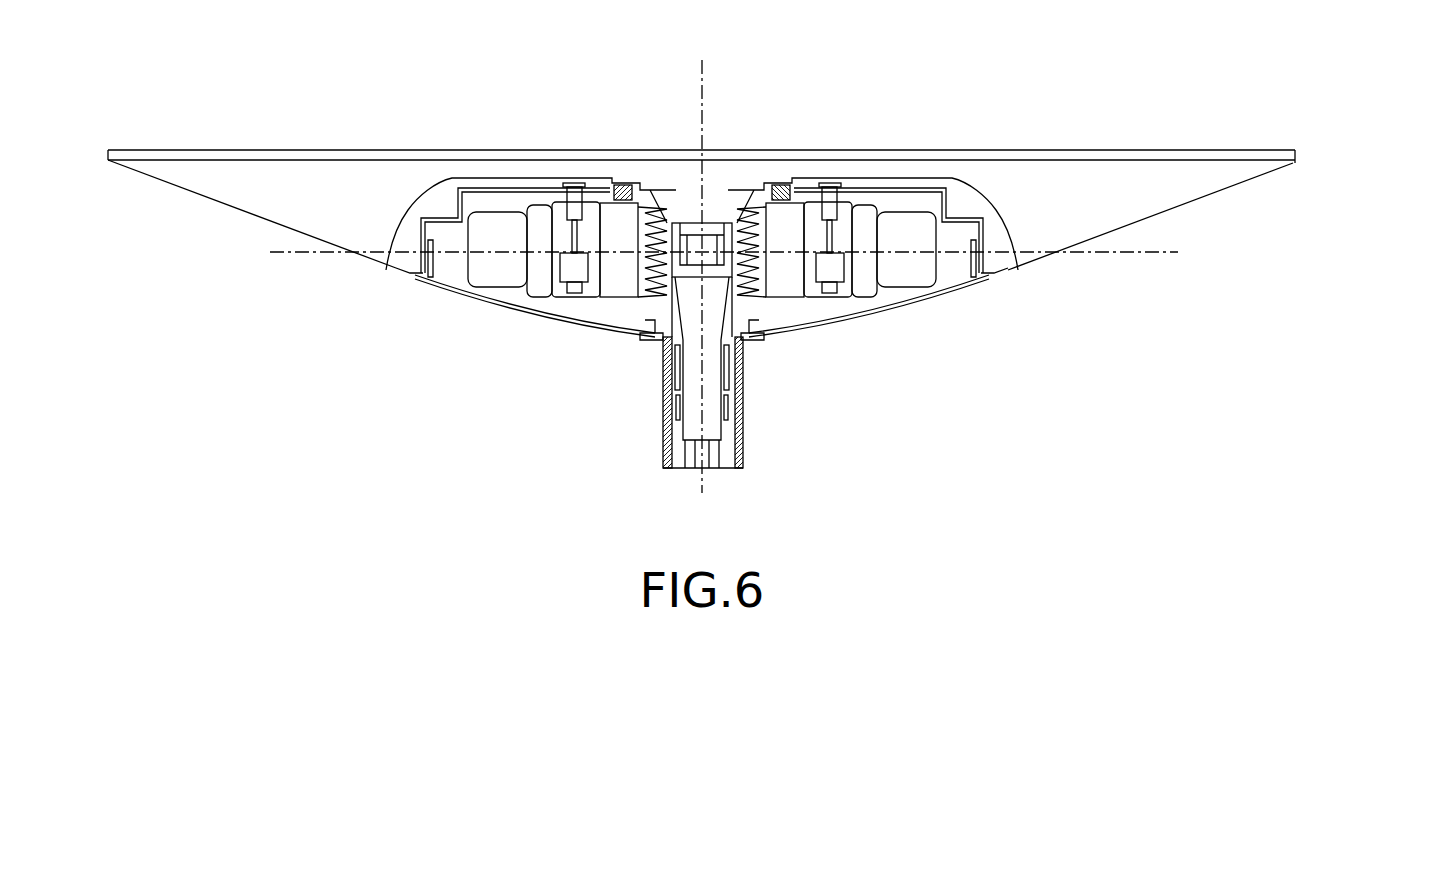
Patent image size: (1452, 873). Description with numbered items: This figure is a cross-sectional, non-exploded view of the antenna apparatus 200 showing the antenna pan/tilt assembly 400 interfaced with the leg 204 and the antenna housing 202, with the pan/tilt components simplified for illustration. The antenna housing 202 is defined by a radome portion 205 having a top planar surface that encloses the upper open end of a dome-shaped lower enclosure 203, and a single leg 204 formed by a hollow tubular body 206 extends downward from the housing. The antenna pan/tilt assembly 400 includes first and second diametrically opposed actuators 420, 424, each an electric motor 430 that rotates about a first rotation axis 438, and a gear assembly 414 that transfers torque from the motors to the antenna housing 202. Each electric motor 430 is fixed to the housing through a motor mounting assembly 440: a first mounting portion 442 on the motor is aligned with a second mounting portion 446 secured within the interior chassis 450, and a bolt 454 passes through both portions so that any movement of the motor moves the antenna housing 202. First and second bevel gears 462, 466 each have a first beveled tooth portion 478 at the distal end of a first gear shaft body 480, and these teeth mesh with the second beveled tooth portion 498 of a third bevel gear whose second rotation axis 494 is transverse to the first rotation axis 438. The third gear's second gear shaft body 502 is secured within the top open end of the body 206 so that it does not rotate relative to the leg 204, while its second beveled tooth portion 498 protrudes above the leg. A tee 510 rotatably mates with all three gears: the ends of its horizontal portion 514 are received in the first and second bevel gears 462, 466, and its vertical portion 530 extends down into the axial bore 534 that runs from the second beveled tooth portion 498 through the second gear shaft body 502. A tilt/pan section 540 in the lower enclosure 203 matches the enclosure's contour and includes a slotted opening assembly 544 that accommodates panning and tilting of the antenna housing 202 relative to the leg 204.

The antenna apparatus 200 is at (1232, 253).
The antenna housing 202 is at (1318, 150).
The lower enclosure 203 is at (1100, 235).
The leg 204 is at (748, 420).
The radome portion 205 is at (1197, 155).
The tubular body 206 is at (742, 468).
The antenna pan/tilt assembly 400 is at (455, 208).
The gear assembly 414 is at (628, 322).
The first actuator 420 is at (982, 215).
The second actuator 424 is at (495, 192).
The electric motor 430 is at (500, 272).
The first rotation axis 438 is at (297, 255).
The motor mounting assembly 440 is at (865, 182).
The first mounting portion 442 is at (830, 268).
The second mounting portion 446 is at (827, 185).
The interior chassis 450 is at (985, 240).
The bolt 454 is at (934, 202).
The first bevel gear 462 is at (782, 195).
The second bevel gear 466 is at (623, 193).
The first beveled tooth portion 478 is at (653, 200).
The first gear shaft body 480 is at (588, 203).
The second rotation axis 494 is at (704, 92).
The second beveled tooth portion 498 is at (753, 293).
The second gear shaft body 502 is at (762, 337).
The tee 510 is at (683, 220).
The horizontal portion 514 is at (725, 230).
The vertical portion 530 is at (722, 437).
The axial bore 534 is at (688, 412).
The tilt/pan section 540 is at (962, 292).
The slotted opening assembly 544 is at (652, 333).